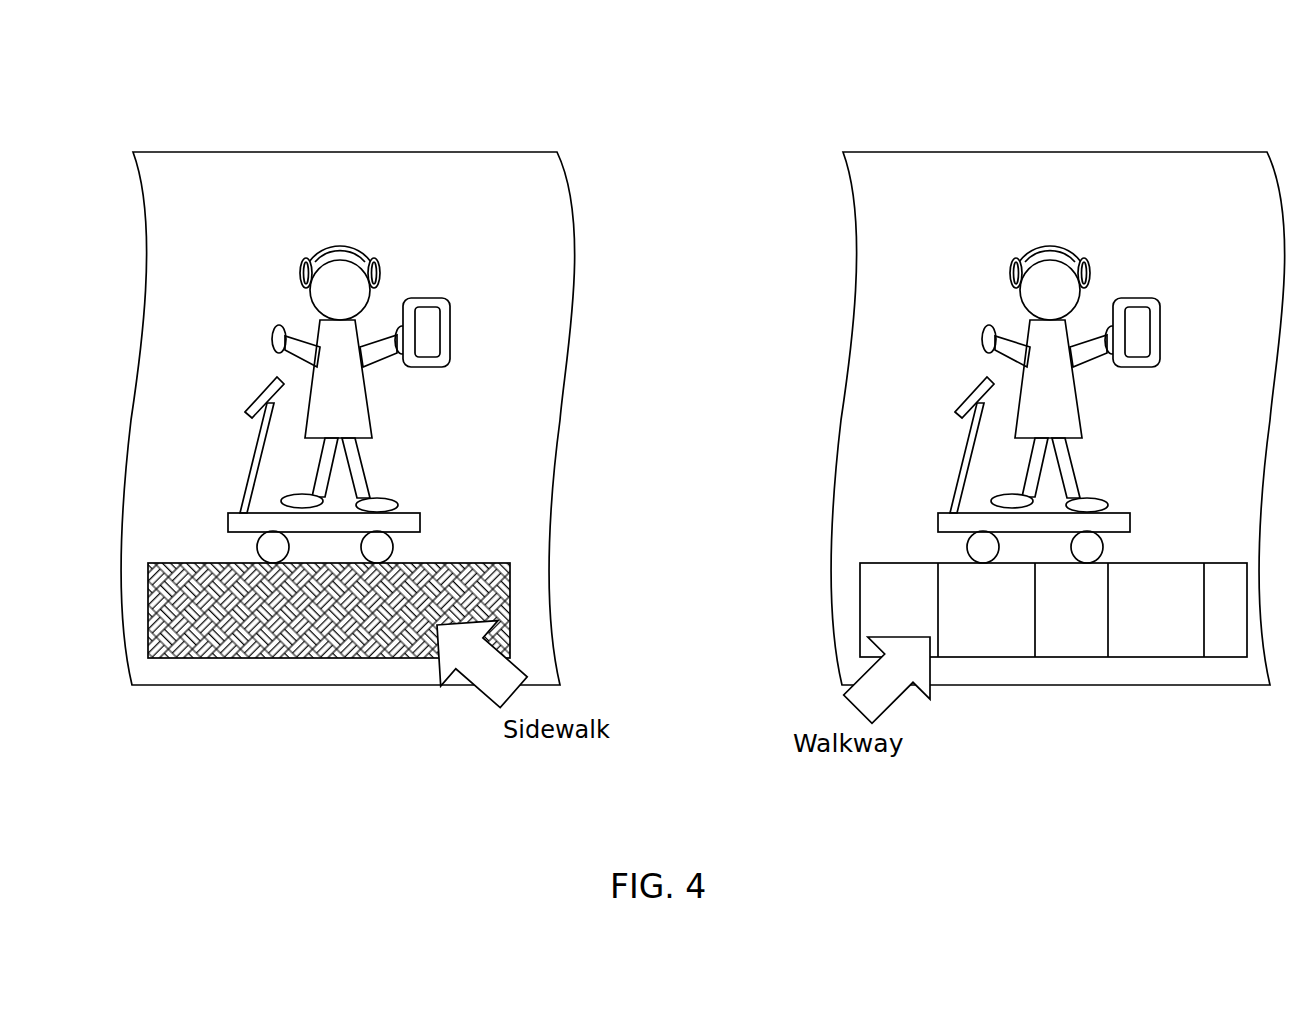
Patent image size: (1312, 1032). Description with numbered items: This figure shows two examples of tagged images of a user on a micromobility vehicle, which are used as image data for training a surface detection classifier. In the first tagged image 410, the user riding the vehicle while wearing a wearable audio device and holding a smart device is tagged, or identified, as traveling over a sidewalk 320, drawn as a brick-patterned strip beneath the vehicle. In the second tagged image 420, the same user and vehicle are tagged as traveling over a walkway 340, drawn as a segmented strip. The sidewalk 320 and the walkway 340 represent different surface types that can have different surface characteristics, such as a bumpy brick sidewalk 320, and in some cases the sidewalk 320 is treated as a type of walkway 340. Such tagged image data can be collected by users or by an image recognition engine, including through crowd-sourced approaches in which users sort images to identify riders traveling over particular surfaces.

The tagged image 410 is at (192, 117).
The tagged image 420 is at (1058, 367).
The sidewalk 320 is at (192, 543).
The walkway 340 is at (1049, 566).